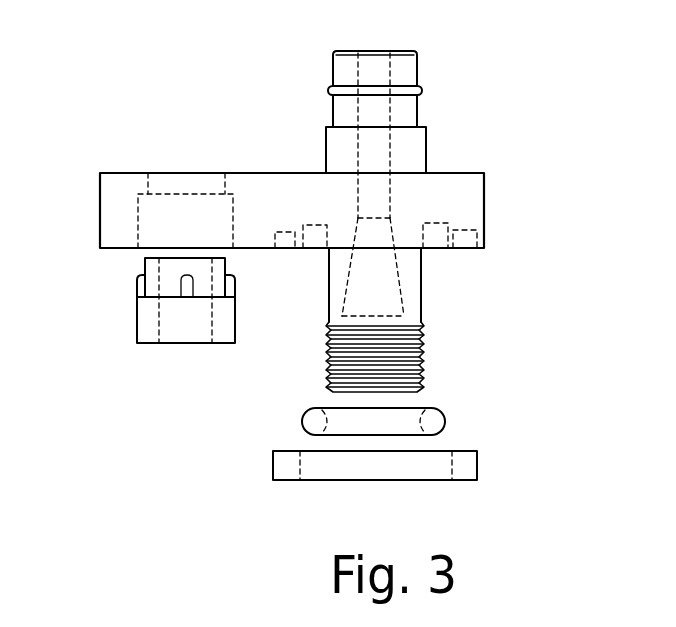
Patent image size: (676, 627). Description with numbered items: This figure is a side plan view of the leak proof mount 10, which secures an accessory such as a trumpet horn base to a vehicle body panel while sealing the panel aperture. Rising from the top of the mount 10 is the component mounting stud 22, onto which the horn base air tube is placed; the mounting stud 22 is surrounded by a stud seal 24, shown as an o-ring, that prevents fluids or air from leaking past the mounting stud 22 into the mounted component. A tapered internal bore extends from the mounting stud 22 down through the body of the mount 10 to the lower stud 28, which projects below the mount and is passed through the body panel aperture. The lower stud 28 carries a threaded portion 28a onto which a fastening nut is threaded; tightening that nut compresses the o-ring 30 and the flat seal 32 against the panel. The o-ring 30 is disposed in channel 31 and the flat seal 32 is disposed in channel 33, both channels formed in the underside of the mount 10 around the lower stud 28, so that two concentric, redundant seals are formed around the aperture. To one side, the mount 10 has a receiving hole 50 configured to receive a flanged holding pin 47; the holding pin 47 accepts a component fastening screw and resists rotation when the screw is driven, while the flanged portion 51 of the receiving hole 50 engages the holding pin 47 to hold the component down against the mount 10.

The leak proof mount 10 is at (182, 102).
The component mounting stud 22 is at (326, 133).
The stud seal 24 is at (422, 91).
The lower stud 28 is at (413, 300).
The threaded portion 28a is at (407, 343).
The o-ring 30 is at (427, 423).
The channel 31 is at (438, 252).
The flat seal 32 is at (462, 468).
The channel 33 is at (468, 236).
The holding pin 47 is at (148, 314).
The receiving hole 50 is at (140, 218).
The flanged portion 51 is at (150, 178).